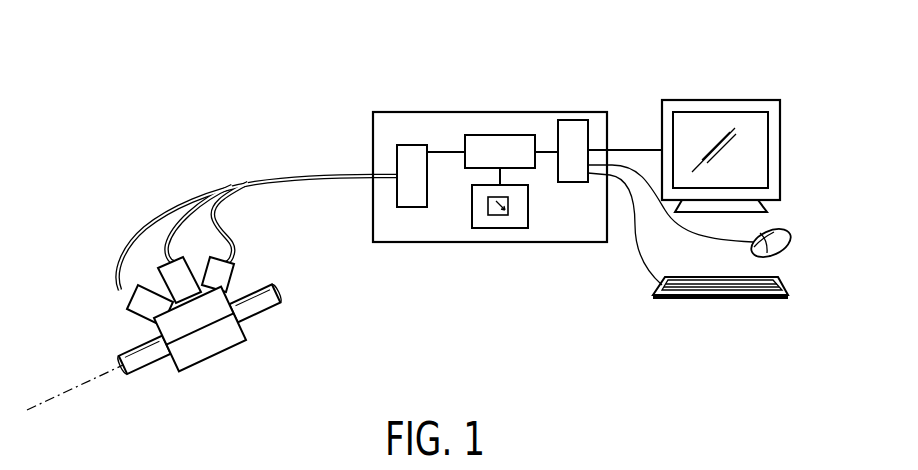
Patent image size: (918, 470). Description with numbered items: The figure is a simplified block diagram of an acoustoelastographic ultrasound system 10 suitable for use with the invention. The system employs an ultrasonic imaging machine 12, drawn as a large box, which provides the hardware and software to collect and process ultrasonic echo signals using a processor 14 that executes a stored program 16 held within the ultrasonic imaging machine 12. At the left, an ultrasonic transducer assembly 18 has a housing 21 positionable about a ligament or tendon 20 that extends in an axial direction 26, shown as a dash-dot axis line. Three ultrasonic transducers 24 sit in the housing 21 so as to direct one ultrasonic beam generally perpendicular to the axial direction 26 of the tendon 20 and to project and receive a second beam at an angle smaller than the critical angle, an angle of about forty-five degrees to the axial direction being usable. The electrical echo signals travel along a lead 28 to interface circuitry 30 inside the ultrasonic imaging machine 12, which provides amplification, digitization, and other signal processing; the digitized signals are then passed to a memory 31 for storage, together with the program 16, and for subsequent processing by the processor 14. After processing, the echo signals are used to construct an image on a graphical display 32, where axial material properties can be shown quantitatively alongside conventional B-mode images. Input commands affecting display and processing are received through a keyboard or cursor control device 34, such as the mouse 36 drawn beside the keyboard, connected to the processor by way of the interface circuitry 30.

The acoustoelastographic ultrasound system 10 is at (427, 227).
The ultrasonic imaging machine 12 is at (491, 168).
The processor 14 is at (498, 135).
The stored program 16 is at (482, 235).
The ultrasonic transducer assembly 18 is at (231, 276).
The ligament or tendon 20 is at (258, 318).
The housing 21 is at (188, 350).
The ultrasonic transducers 24 is at (211, 256).
The axial direction 26 is at (82, 385).
The lead 28 is at (305, 174).
The interface circuitry 30 is at (408, 143).
The memory 31 is at (478, 214).
The graphical display 32 is at (740, 115).
The keyboard or cursor control device 34 is at (720, 298).
The mouse 36 is at (793, 238).